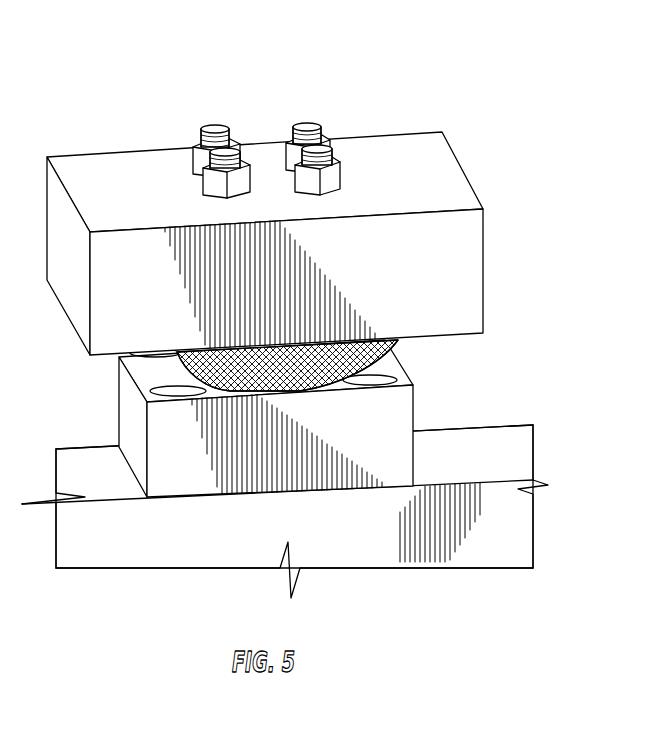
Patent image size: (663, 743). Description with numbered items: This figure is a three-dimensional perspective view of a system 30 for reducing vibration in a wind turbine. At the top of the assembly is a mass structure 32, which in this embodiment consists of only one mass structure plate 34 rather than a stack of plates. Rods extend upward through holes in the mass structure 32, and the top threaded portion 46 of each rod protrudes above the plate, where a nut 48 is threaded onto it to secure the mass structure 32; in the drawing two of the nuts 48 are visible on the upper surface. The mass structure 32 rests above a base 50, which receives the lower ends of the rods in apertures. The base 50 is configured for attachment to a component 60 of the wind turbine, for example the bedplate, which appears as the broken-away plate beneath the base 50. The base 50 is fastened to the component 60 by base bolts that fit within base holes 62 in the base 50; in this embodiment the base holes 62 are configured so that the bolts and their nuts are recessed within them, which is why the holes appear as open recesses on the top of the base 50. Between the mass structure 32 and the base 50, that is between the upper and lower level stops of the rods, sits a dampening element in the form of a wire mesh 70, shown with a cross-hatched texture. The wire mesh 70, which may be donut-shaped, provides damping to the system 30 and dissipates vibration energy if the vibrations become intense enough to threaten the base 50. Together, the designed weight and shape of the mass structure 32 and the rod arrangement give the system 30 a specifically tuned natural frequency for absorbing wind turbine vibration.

The system for reducing vibration 30 is at (316, 177).
The mass structure 32 is at (300, 243).
The mass structure plate 34 is at (465, 300).
The top threaded portion 46 is at (313, 127).
The nut 48 is at (330, 180).
The base 50 is at (265, 418).
The component of the wind turbine 60 is at (470, 513).
The base hole 62 is at (405, 376).
The wire mesh 70 is at (398, 352).